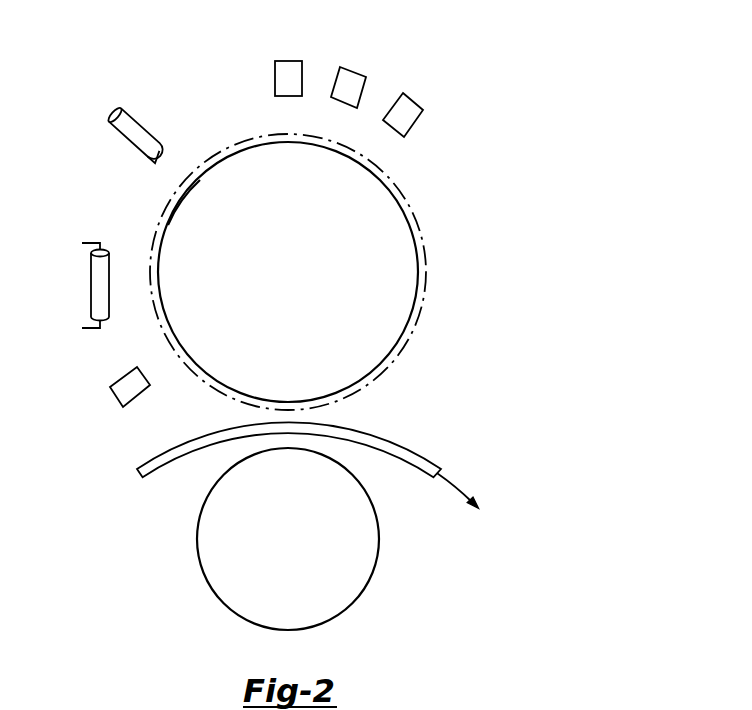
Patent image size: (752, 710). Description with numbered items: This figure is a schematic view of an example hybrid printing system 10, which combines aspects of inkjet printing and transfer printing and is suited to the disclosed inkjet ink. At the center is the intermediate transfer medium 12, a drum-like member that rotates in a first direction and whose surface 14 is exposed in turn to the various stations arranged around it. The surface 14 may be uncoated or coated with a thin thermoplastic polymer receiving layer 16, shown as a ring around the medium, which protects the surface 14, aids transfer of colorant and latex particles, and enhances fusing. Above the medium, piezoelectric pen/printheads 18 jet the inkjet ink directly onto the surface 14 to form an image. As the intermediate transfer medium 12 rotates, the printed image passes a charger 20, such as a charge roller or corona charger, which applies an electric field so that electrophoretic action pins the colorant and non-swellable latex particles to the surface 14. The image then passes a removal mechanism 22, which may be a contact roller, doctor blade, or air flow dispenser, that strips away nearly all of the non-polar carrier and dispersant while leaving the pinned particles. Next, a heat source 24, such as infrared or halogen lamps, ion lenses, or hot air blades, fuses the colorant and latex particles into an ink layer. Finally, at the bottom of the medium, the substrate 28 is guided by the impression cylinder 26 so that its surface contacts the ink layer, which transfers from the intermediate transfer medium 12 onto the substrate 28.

The hybrid printing system 10 is at (522, 98).
The intermediate transfer medium 12 is at (397, 299).
The surface 14 is at (167, 222).
The polymer receiving layer 16 is at (410, 340).
The piezoelectric pen/printhead 18 is at (288, 61).
The charger 20 is at (115, 115).
The removal mechanism 22 is at (91, 285).
The heat source 24 is at (113, 393).
The impression cylinder 26 is at (357, 542).
The substrate 28 is at (401, 455).